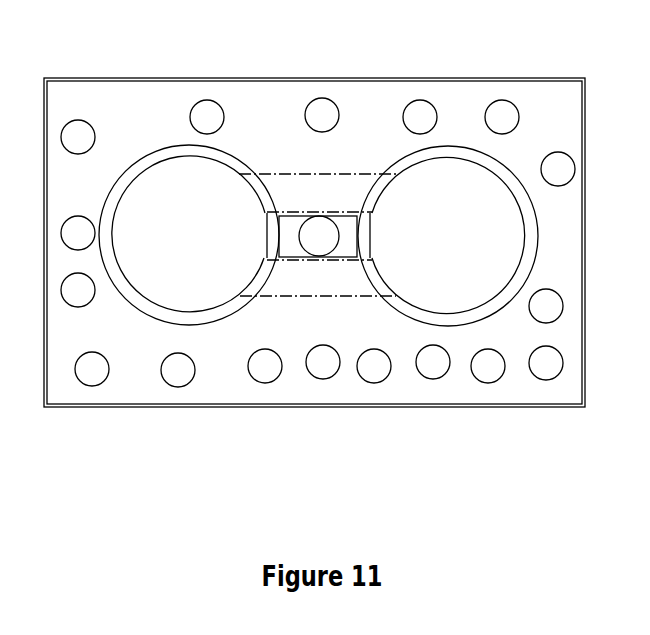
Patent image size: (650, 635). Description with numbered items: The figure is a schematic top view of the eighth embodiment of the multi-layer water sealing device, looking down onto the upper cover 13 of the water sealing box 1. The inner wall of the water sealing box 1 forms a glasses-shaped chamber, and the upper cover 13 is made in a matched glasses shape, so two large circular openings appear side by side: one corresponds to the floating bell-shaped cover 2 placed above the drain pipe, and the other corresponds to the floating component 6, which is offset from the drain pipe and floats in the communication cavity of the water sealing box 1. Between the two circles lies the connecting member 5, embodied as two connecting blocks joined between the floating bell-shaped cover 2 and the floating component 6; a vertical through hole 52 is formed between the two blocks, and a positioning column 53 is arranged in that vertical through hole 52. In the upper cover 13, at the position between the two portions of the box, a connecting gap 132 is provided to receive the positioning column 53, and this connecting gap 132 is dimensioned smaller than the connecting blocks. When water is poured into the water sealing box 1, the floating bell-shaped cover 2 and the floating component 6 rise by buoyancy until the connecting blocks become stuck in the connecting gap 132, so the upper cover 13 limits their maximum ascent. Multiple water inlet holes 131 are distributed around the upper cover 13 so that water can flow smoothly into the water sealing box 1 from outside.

The water sealing box 1 is at (85, 78).
The upper cover 13 is at (122, 107).
The water inlet hole 131 is at (205, 115).
The floating bell-shaped cover 2 is at (223, 183).
The connecting gap 132 is at (288, 233).
The connecting member 5 is at (358, 187).
The floating component 6 is at (430, 183).
The vertical through hole 52 is at (273, 243).
The positioning column 53 is at (318, 236).